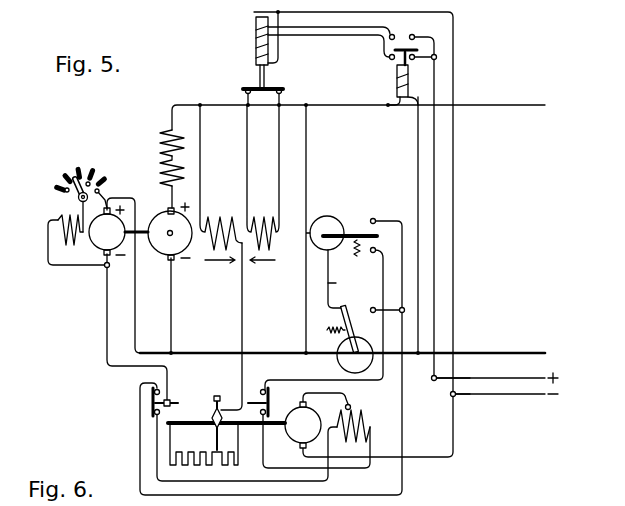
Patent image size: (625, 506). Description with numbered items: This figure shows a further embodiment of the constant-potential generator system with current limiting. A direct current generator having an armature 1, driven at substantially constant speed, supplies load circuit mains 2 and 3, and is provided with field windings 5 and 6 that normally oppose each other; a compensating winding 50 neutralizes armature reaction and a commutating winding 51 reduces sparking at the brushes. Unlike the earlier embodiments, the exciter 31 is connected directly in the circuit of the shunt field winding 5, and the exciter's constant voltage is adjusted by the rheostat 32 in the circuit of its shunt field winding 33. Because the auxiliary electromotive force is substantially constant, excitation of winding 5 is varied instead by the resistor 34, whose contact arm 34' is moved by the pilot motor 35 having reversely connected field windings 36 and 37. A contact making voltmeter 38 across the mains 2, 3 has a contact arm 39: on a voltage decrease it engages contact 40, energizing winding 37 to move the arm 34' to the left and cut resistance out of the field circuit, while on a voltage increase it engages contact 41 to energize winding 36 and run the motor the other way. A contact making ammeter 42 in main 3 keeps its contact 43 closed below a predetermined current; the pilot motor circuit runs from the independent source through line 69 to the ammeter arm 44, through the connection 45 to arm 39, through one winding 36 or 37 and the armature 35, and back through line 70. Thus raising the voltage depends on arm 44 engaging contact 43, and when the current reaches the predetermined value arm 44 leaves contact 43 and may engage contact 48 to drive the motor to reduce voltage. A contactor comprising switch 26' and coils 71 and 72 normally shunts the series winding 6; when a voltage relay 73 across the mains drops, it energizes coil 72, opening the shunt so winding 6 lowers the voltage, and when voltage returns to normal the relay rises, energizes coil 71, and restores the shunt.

The armature 1 is at (160, 218).
The main 2 is at (490, 104).
The main 3 is at (208, 352).
The field winding 5 is at (219, 215).
The field winding 6 is at (259, 215).
The switch 26' is at (244, 92).
The exciter 31 is at (101, 244).
The rheostat 32 is at (86, 168).
The shunt field winding 33 is at (55, 220).
The resistor 34 is at (226, 444).
The contact arm 34' is at (200, 423).
The pilot motor 35 is at (292, 440).
The field winding 36 is at (345, 407).
The field winding 37 is at (362, 418).
The contact making voltmeter 38 is at (325, 216).
The contact arm 39 is at (353, 233).
The contact 40 is at (373, 254).
The contact 41 is at (375, 218).
The contact making ammeter 42 is at (338, 361).
The contact 43 is at (327, 330).
The contact arm 44 is at (352, 322).
The connection 45 is at (336, 283).
The contact 48 is at (370, 310).
The compensating winding 50 is at (160, 174).
The commutating winding 51 is at (160, 146).
The line 69 is at (496, 377).
The line 70 is at (492, 396).
The coil 71 is at (256, 58).
The coil 72 is at (256, 24).
The voltage relay 73 is at (397, 76).